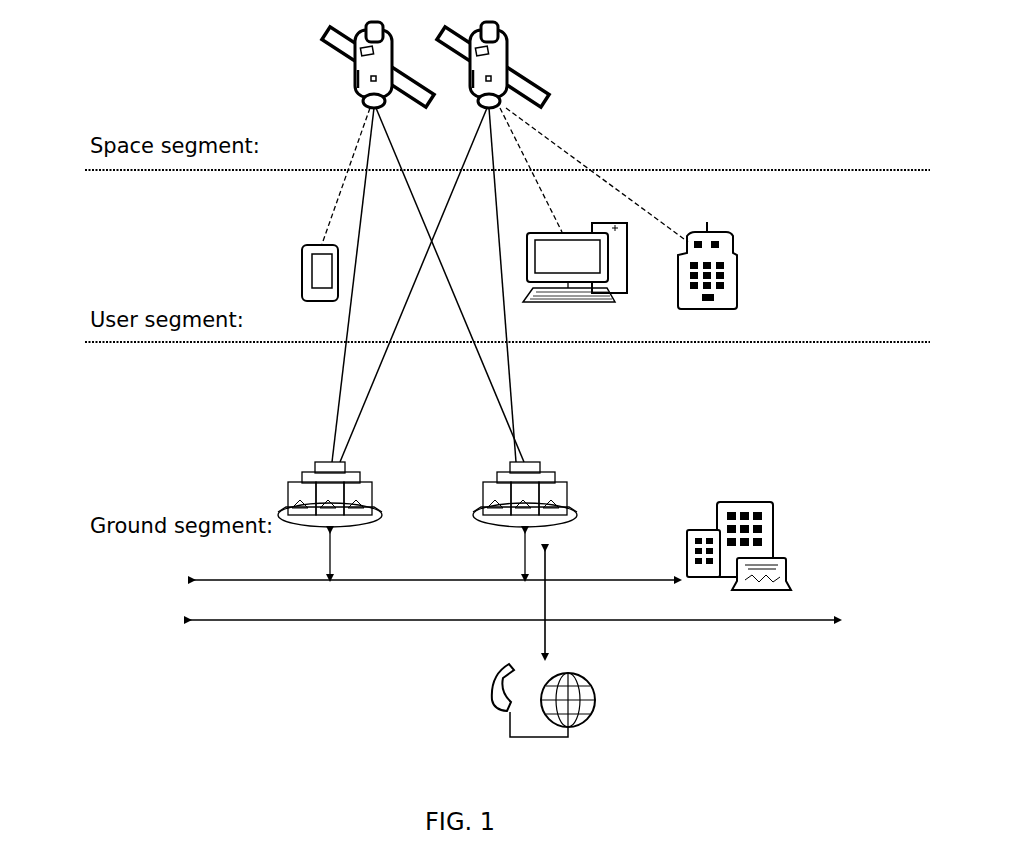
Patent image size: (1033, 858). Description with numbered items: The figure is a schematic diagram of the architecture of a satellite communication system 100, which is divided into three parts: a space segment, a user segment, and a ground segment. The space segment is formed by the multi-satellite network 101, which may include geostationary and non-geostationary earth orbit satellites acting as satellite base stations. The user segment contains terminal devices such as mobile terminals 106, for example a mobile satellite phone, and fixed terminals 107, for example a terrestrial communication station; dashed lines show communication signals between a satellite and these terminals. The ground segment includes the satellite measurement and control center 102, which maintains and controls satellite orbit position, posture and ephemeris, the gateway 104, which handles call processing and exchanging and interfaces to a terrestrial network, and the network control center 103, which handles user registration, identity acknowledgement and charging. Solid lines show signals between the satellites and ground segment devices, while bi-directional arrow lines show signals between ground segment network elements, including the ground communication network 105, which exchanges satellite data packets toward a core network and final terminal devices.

The satellite communication system 100 is at (158, 58).
The multi-satellite network 101 is at (547, 77).
The satellite measurement and control center 102 is at (305, 458).
The network control center 103 is at (782, 506).
The gateway 104 is at (498, 468).
The ground communication network 105 is at (598, 709).
The mobile terminal 106 is at (300, 254).
The fixed terminal 107 is at (742, 249).